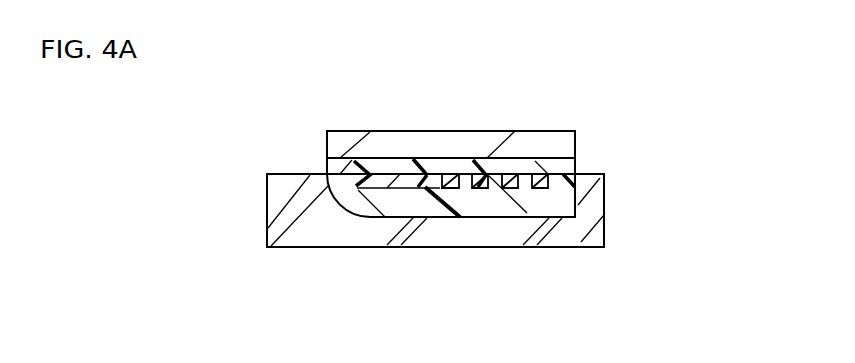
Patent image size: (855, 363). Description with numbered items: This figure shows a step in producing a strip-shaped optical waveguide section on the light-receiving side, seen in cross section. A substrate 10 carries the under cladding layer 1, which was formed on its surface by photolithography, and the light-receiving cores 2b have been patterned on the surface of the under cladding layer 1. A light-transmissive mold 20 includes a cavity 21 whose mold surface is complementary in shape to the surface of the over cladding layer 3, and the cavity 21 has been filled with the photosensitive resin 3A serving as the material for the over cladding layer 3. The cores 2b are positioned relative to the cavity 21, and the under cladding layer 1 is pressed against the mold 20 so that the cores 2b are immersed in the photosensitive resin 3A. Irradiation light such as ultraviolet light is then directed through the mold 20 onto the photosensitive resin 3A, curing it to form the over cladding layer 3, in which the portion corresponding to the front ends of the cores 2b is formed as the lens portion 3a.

The substrate 10 is at (560, 145).
The under cladding layer 1 is at (565, 166).
The light-transmissive mold 20 is at (590, 232).
The cavity 21 is at (503, 212).
The lens portion 3a is at (348, 202).
The light-receiving cores 2b is at (487, 187).
The over cladding layer 3 is at (550, 203).
The photosensitive resin 3A is at (527, 247).